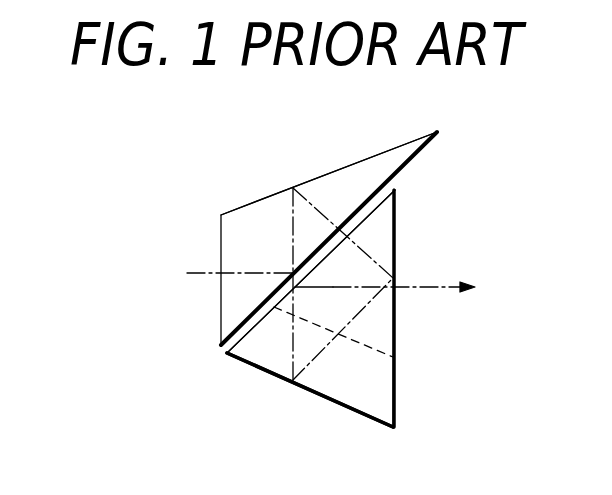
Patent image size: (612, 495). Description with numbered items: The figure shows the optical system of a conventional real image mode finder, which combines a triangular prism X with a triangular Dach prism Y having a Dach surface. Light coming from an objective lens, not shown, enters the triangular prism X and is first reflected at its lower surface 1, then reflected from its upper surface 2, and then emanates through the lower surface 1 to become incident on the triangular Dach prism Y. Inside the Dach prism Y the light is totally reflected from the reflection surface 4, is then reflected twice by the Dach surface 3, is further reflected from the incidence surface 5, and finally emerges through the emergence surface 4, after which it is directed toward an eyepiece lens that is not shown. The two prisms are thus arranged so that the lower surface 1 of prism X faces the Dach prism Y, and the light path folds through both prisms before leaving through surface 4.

The lower surface 1 is at (421, 153).
The upper surface 2 is at (331, 183).
The Dach surface 3 is at (303, 387).
The reflection surface 4 is at (395, 390).
The incidence surface 5 is at (250, 340).
The triangular prism X is at (259, 217).
The triangular Dach prism Y is at (343, 390).